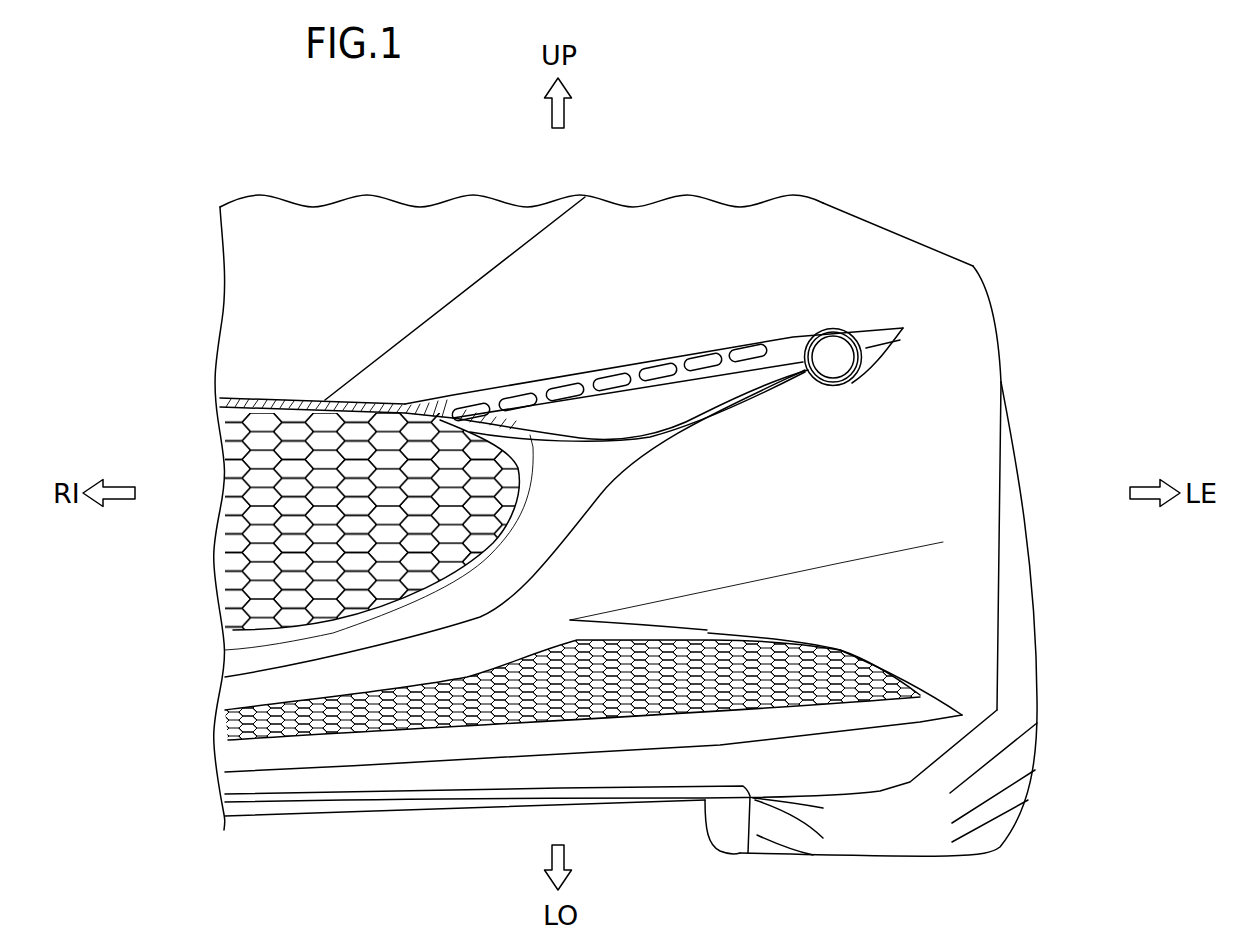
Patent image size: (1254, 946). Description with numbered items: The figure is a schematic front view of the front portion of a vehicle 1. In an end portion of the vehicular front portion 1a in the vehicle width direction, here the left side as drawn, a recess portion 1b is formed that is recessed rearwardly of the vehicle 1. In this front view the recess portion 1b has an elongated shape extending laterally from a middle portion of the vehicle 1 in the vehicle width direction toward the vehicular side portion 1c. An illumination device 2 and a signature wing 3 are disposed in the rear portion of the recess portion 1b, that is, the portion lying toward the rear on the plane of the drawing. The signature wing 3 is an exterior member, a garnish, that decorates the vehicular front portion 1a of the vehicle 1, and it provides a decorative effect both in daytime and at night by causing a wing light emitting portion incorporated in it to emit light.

The vehicle 1 is at (963, 210).
The vehicular front portion 1a is at (273, 493).
The recess portion 1b is at (777, 337).
The vehicular side portion 1c is at (1007, 340).
The illumination device 2 is at (741, 286).
The signature wing 3 is at (624, 410).